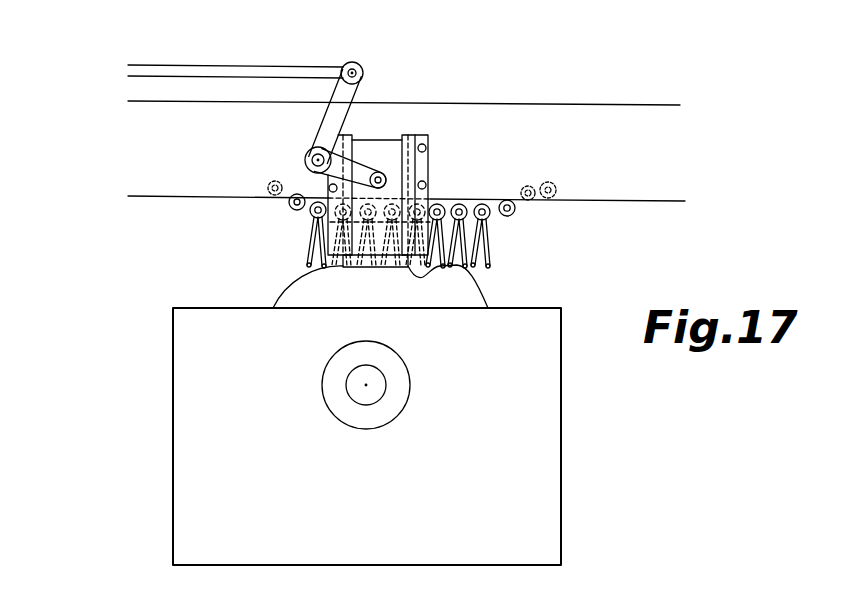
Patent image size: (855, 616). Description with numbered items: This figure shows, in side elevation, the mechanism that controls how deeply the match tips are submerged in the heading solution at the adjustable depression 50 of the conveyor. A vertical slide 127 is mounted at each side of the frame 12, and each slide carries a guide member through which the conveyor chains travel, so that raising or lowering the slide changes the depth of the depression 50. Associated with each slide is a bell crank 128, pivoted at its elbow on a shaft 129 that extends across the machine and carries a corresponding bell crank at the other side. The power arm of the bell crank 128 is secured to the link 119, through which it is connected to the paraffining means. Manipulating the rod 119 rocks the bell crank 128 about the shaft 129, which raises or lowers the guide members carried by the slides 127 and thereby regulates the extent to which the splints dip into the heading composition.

The frame 12 is at (603, 112).
The link 119 is at (277, 45).
The vertical slide 127 is at (380, 150).
The bell crank 128 is at (322, 125).
The shaft 129 is at (310, 161).
The depressed point of the conveyor 50 is at (462, 207).